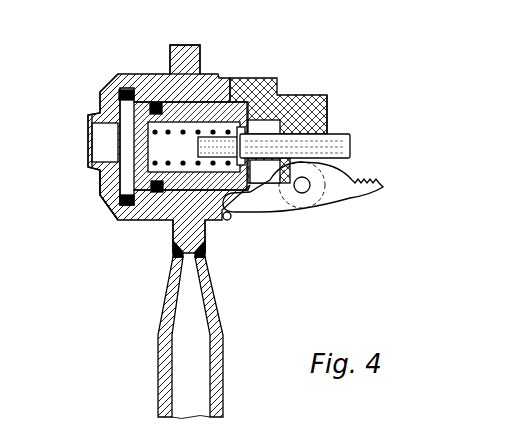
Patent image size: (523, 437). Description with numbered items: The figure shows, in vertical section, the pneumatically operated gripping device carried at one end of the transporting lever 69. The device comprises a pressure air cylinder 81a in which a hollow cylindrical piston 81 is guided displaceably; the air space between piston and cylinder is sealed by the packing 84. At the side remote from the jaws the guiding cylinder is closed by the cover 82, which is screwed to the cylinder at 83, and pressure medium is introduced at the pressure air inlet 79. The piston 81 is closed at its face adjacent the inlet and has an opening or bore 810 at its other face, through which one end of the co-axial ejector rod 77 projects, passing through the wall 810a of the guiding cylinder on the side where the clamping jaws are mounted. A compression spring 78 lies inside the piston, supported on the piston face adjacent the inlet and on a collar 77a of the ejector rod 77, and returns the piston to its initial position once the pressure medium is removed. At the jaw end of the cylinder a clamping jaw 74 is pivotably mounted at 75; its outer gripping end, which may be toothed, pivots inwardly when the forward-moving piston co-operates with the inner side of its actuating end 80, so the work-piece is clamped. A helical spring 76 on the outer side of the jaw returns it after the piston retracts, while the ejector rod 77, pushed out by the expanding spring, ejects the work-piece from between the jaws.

The transporting lever 69 is at (212, 328).
The clamping jaw 74 is at (350, 210).
The pivot of clamping jaw 75 is at (308, 208).
The helical spring 76 is at (228, 222).
The ejector rod 77 is at (357, 140).
The collar 77a is at (103, 200).
The compression spring 78 is at (244, 88).
The pressure air inlet 79 is at (90, 146).
The actuating end of clamping jaw 80 is at (244, 185).
The piston 81 is at (146, 102).
The pressure air cylinder 81a is at (329, 101).
The cover 82 is at (107, 90).
The screw connection 83 is at (128, 226).
The packing 84 is at (201, 73).
The opening or bore 810 is at (281, 97).
The wall of guiding cylinder 810a is at (331, 120).